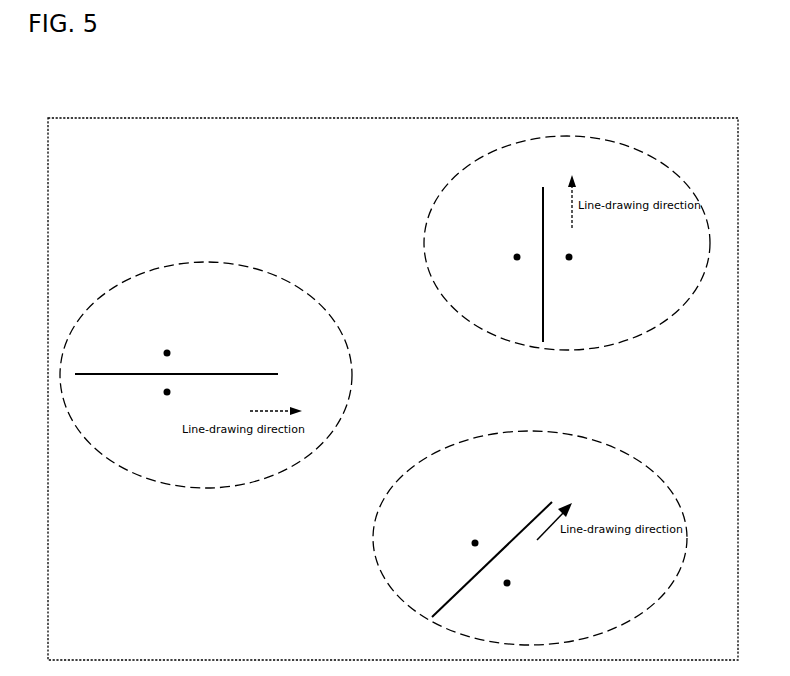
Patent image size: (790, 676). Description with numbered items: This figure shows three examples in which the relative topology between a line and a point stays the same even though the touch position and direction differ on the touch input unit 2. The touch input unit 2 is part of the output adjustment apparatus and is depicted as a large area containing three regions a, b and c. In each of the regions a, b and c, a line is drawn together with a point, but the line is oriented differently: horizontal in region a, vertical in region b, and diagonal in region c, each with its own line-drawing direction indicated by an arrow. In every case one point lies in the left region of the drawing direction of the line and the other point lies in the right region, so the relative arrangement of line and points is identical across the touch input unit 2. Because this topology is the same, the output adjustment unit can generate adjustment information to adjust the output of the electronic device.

The touch input unit 2 is at (660, 117).
The region a is at (233, 262).
The region b is at (425, 228).
The region c is at (423, 457).